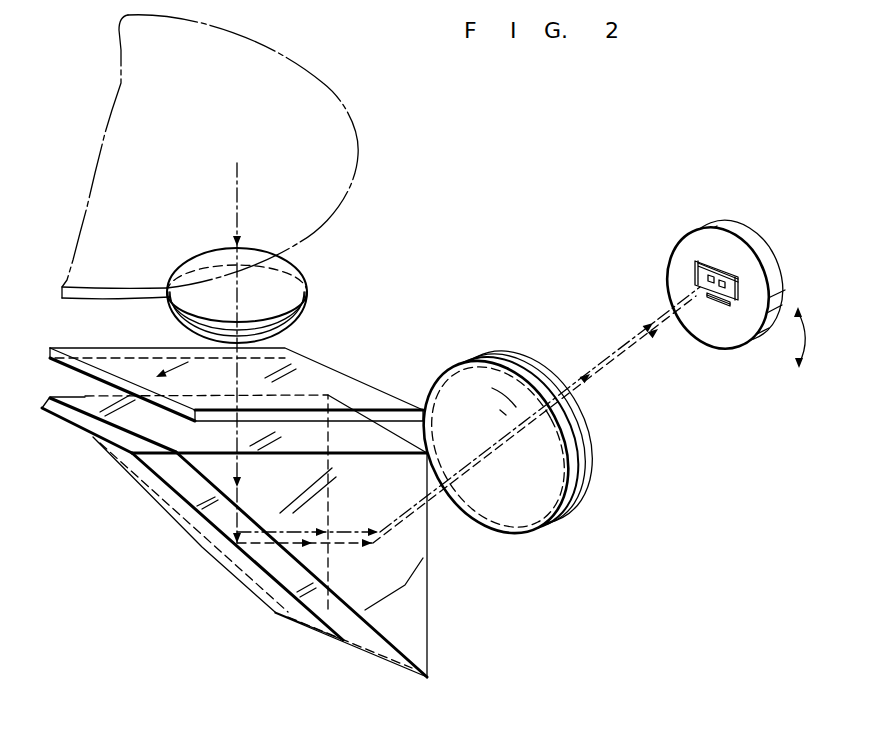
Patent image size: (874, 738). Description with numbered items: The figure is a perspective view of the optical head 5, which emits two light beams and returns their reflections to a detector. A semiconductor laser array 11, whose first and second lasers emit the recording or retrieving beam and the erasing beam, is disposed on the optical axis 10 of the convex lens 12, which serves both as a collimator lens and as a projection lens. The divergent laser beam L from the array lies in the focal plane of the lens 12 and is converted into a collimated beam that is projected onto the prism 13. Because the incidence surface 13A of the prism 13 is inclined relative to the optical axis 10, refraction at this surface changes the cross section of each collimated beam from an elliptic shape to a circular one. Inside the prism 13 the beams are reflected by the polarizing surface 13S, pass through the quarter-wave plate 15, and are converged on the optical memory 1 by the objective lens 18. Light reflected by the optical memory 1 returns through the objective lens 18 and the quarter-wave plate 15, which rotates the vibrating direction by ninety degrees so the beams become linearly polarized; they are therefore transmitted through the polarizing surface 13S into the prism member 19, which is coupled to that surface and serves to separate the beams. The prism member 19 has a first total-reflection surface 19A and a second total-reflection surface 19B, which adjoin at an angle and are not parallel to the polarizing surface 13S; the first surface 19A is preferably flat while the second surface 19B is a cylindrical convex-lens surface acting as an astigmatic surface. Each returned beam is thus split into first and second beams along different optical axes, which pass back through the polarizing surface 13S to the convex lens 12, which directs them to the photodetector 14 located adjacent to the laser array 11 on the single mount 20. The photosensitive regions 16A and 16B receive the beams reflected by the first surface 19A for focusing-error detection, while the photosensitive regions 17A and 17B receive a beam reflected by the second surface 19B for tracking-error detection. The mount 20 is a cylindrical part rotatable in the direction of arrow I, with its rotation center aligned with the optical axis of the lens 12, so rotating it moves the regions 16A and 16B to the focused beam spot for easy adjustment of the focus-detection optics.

The optical memory 1 is at (335, 118).
The optical head 5 is at (364, 286).
The optical axis 10 is at (598, 370).
The semiconductor laser array 11 is at (712, 303).
The convex lens 12 is at (522, 526).
The prism 13 is at (428, 630).
The incidence surface 13A is at (400, 432).
The polarizing surface 13S is at (93, 430).
The photodetector 14 is at (732, 275).
The quarter-wave plate 15 is at (336, 369).
The photosensitive region 16A is at (725, 277).
The photosensitive region 16B is at (727, 302).
The photosensitive region 17A is at (714, 278).
The photosensitive region 17B is at (703, 280).
The objective lens 18 is at (293, 263).
The prism member 19 is at (207, 545).
The first total-reflection surface 19A is at (150, 505).
The second total-reflection surface 19B is at (282, 588).
The mount 20 is at (667, 258).
The direction of rotation I is at (795, 347).
The laser beam L is at (397, 548).